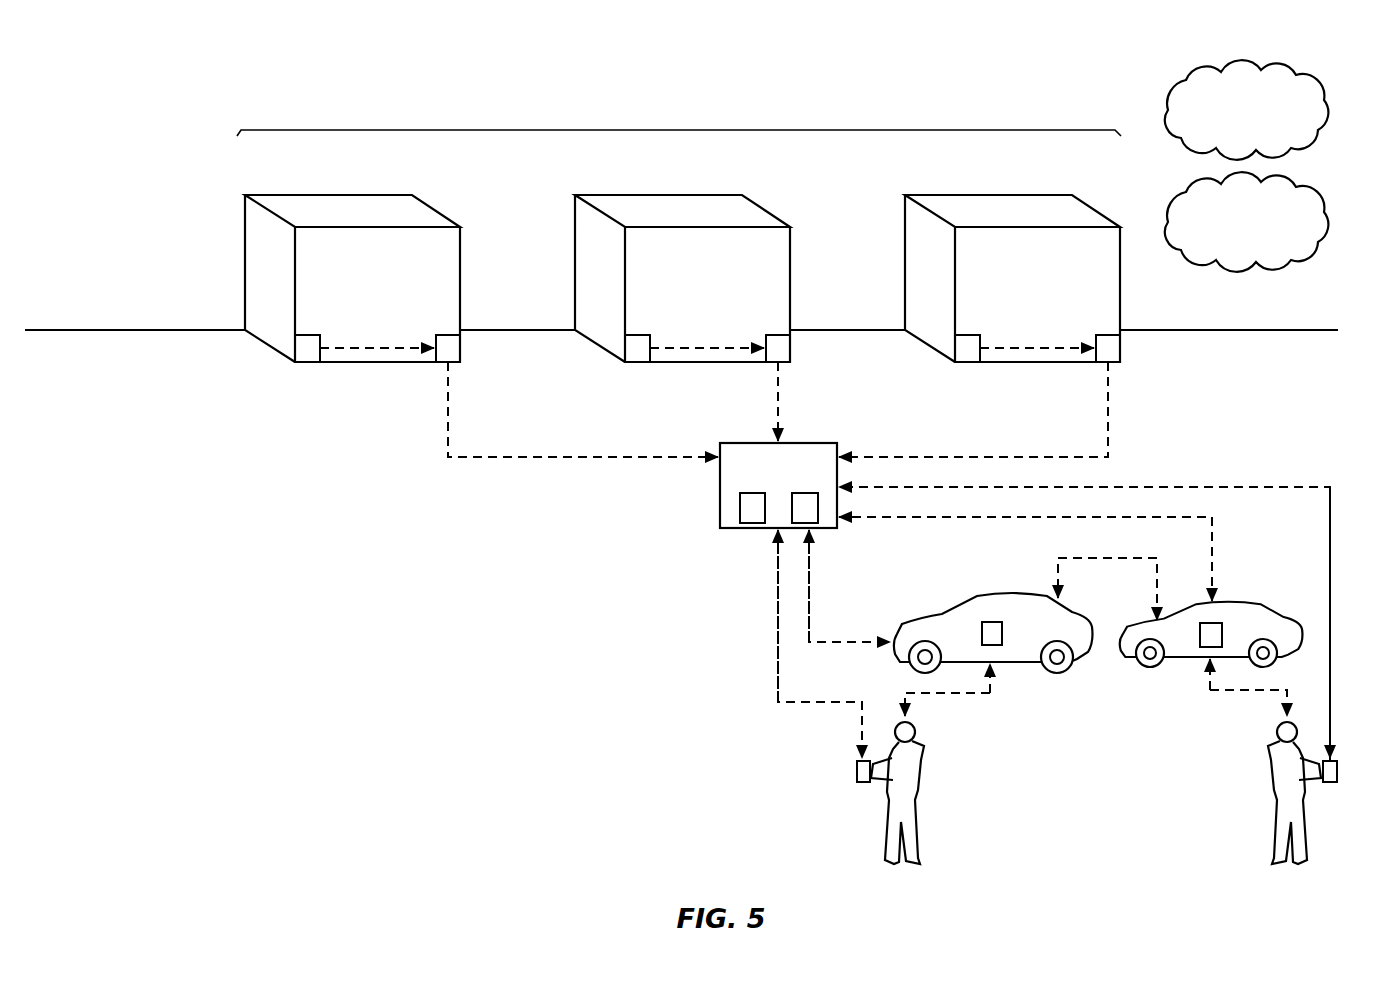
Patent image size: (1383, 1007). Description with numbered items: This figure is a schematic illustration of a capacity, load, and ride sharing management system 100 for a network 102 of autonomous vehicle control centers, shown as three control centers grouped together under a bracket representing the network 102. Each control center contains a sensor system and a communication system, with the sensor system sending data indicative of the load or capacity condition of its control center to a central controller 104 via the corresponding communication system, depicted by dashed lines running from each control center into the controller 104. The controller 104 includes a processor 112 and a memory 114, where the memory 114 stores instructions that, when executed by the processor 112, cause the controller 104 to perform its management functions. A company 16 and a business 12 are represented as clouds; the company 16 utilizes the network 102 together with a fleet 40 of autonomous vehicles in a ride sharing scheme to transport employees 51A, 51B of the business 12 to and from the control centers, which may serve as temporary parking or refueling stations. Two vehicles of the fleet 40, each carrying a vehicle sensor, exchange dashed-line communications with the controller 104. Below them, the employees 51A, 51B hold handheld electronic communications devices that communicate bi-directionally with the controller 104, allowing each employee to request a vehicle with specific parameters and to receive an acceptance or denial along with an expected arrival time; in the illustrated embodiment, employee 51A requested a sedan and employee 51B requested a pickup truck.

The network 102 is at (676, 130).
The company 16 is at (1260, 72).
The business 12 is at (1260, 184).
The capacity, load, and/or ride sharing management system 100 is at (620, 517).
The controller 104 is at (720, 515).
The processor 112 is at (752, 493).
The memory 114 is at (806, 493).
The fleet 40 is at (1249, 583).
The employee 51A is at (960, 772).
The employee 51B is at (1250, 772).